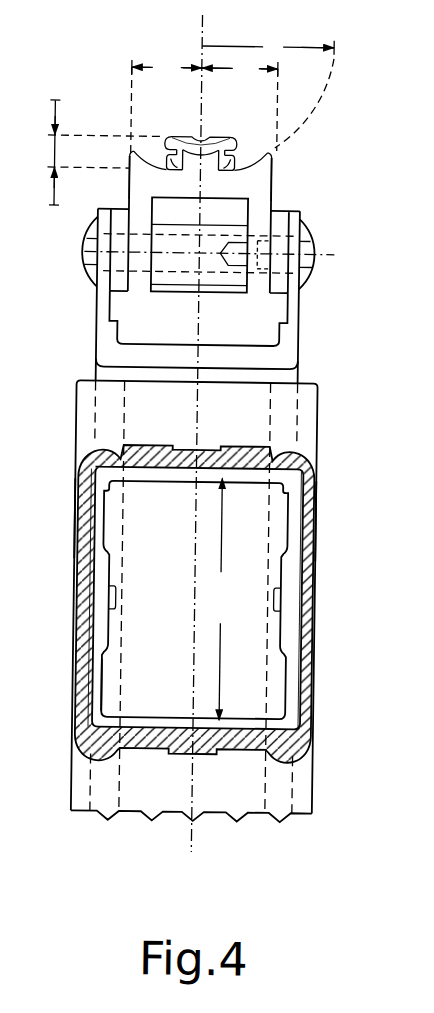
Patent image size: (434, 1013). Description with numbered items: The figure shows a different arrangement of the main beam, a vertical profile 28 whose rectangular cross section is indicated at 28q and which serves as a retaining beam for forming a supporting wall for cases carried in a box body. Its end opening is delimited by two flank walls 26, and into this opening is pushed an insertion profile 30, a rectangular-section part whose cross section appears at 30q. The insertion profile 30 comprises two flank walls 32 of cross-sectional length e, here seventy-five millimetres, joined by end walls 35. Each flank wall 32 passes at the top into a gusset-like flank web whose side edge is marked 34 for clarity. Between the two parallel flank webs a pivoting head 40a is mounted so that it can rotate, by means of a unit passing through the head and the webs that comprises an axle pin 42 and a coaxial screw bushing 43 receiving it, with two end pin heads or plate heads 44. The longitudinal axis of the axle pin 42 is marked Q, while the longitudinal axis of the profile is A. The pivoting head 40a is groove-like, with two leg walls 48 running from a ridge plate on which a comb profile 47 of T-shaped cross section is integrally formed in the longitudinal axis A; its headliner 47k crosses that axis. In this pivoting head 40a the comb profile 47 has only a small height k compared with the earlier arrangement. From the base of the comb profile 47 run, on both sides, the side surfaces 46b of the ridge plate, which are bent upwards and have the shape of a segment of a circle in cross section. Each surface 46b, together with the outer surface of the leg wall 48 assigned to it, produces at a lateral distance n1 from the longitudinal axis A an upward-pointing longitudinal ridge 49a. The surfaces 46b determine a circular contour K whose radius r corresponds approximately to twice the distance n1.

The flank wall 26 is at (100, 518).
The vertical profile 28 is at (324, 419).
The rectangular cross section 28q is at (323, 513).
The insertion profile 30 is at (303, 374).
The cross section of insertion profile 30q is at (151, 732).
The flank wall 32 is at (107, 657).
The side edge 34 is at (139, 282).
The end wall 35 is at (253, 477).
The pivoting head 40a is at (150, 298).
The axle pin 42 is at (243, 262).
The screw bushing 43 is at (178, 262).
The plate head 44 is at (85, 256).
The side surface of ridge plate 46b is at (147, 165).
The comb profile 47 is at (220, 138).
The headliner 47k is at (182, 138).
The leg wall 48 is at (132, 290).
The longitudinal ridge 49a is at (133, 150).
The circular contour K is at (328, 82).
The longitudinal axis of axle pin Q is at (358, 253).
The profile longitudinal axis A is at (201, 768).
The radius r is at (268, 46).
The height of comb profile k is at (106, 153).
The lateral distance n1 is at (204, 106).
The cross-sectional length e is at (221, 599).